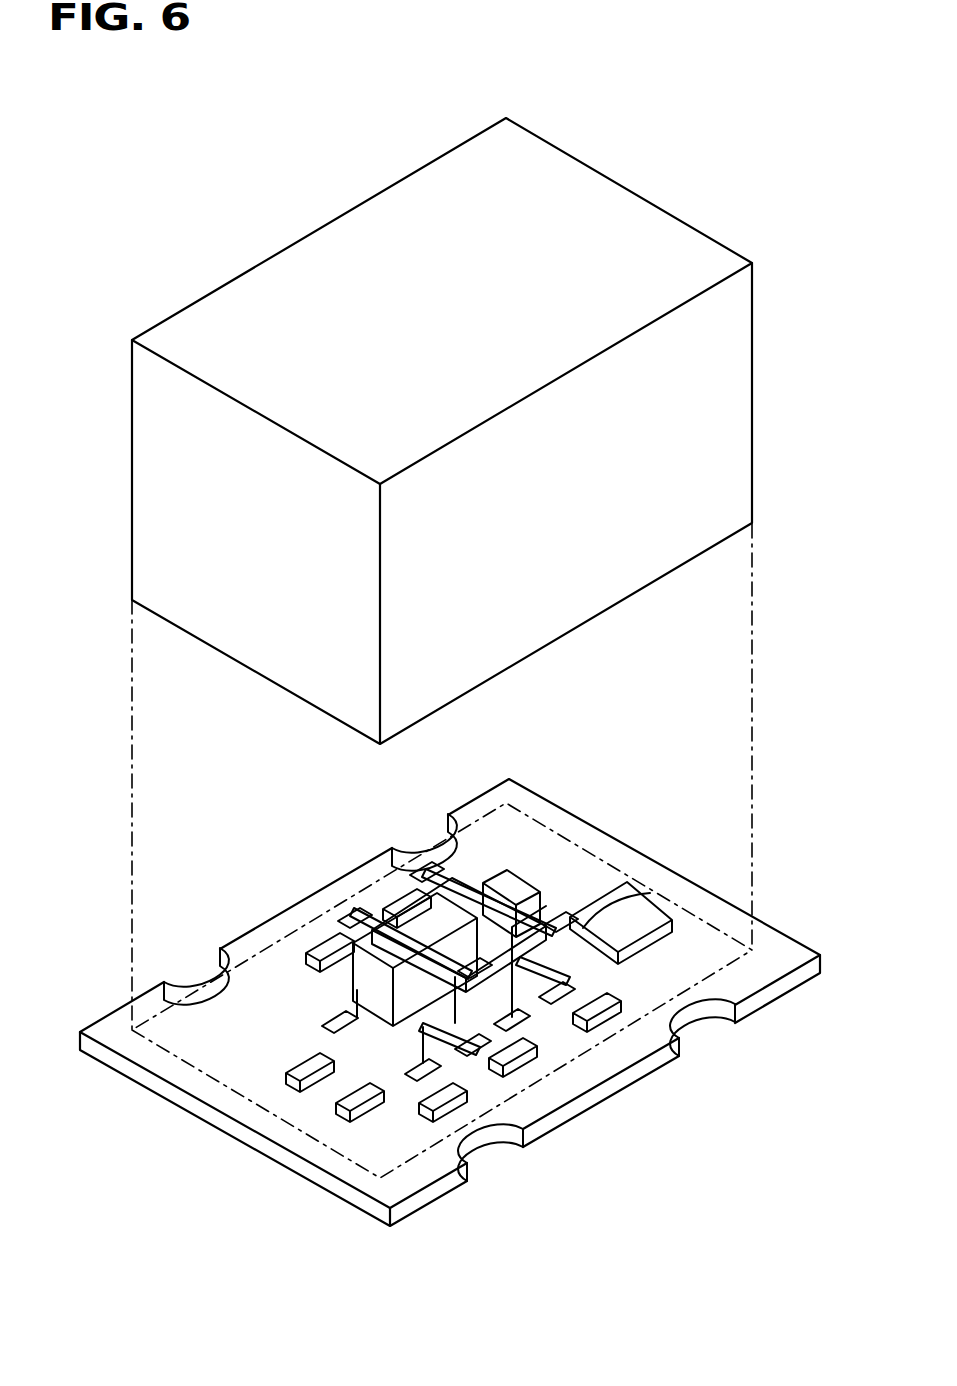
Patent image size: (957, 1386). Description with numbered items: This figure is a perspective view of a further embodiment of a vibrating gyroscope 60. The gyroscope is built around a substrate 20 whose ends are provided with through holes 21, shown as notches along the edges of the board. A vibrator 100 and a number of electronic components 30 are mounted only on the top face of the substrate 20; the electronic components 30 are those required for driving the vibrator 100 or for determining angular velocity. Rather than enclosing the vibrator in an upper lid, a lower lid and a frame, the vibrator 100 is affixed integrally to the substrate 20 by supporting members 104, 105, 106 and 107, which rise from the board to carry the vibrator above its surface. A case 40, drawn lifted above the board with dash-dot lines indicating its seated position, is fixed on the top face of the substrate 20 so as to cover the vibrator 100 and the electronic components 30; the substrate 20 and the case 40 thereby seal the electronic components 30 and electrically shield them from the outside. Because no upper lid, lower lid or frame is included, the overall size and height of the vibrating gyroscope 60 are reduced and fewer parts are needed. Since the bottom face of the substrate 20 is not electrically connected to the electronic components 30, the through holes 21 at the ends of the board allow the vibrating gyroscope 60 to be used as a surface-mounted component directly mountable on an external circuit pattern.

The vibrating gyroscope 60 is at (180, 207).
The case 40 is at (735, 482).
The substrate 20 is at (594, 843).
The through holes 21 is at (432, 840).
The electronic components 30 is at (405, 903).
The vibrator 100 is at (512, 890).
The supporting member 104 is at (425, 1030).
The supporting member 105 is at (622, 905).
The supporting member 106 is at (428, 1078).
The supporting member 107 is at (648, 905).